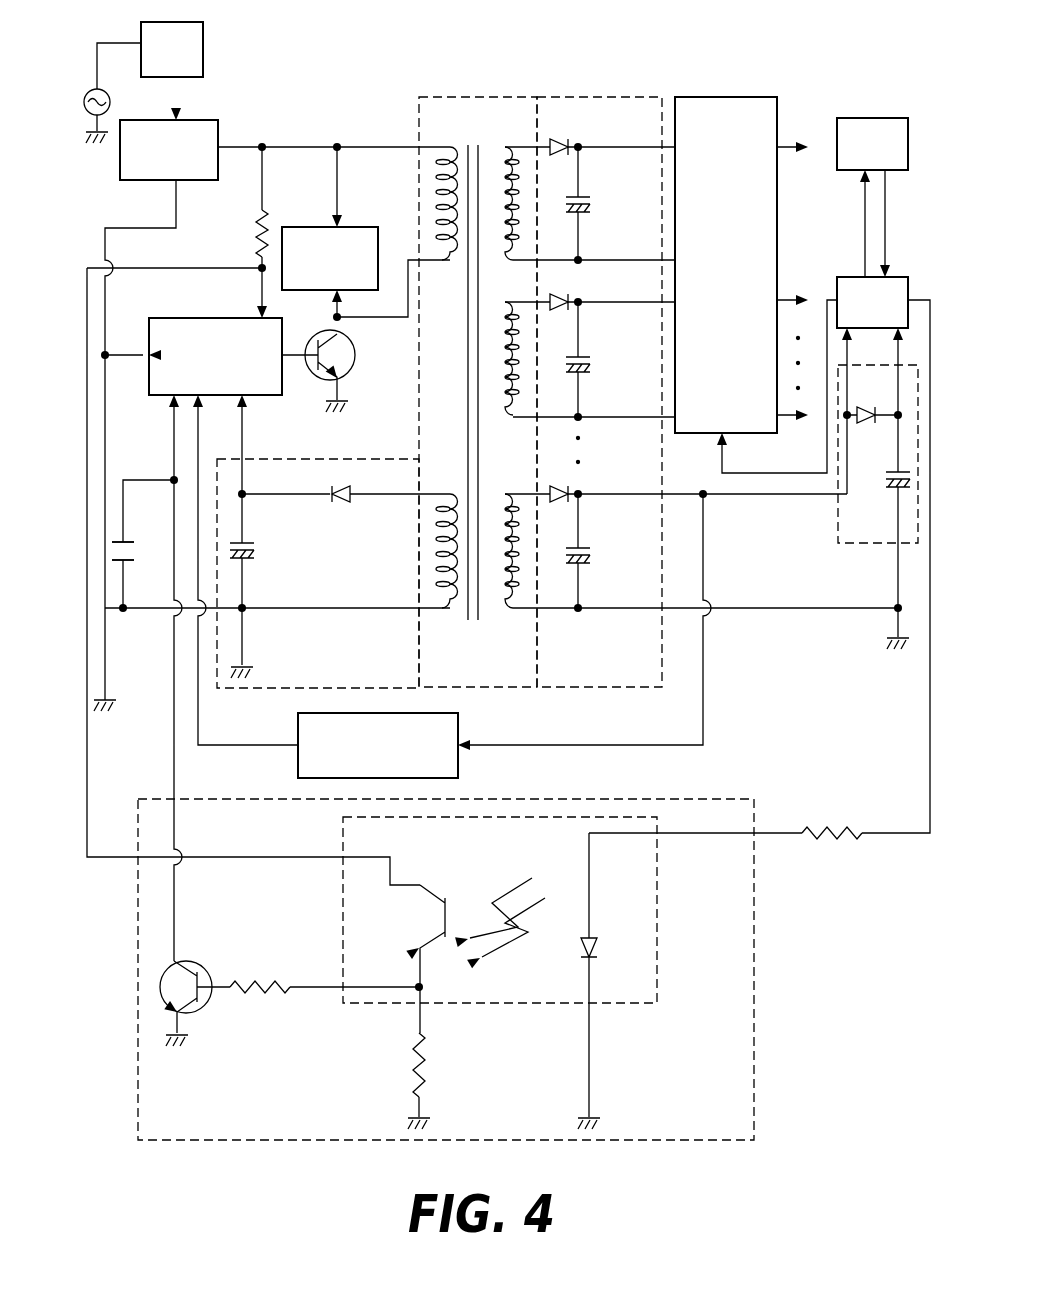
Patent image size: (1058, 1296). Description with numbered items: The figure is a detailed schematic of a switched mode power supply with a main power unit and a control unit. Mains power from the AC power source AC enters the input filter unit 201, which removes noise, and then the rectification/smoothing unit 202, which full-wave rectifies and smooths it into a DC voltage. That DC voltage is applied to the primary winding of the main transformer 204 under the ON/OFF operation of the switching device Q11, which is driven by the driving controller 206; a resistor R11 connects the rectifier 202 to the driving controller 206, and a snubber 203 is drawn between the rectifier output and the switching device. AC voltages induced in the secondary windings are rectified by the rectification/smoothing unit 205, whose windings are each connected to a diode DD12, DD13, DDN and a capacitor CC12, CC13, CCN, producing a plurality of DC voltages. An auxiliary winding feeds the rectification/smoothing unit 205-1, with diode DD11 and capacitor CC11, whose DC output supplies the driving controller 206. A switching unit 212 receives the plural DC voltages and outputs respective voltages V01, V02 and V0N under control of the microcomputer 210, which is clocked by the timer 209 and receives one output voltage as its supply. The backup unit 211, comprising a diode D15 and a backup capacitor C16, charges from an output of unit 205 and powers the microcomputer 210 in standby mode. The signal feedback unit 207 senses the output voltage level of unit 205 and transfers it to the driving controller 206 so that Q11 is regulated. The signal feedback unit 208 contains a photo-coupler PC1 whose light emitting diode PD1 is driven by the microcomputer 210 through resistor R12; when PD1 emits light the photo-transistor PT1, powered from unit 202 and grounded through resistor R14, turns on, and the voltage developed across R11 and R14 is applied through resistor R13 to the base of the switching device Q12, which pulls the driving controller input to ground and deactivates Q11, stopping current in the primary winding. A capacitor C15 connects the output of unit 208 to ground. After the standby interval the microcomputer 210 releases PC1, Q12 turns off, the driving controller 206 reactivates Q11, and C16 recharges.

The input filter unit 201 is at (224, 42).
The rectification/smoothing unit 202 is at (205, 120).
The snubber 203 is at (343, 227).
The main transformer 204 is at (453, 97).
The rectification/smoothing unit 205 is at (701, 369).
The rectification/smoothing unit 205-1 is at (328, 593).
The driving controller 206 is at (165, 318).
The signal feedback unit 207 is at (460, 733).
The signal feedback unit 208 is at (500, 964).
The timer 209 is at (863, 118).
The microcomputer 210 is at (893, 277).
The backup unit 211 is at (843, 464).
The switching unit 212 is at (747, 254).
The AC power source AC is at (110, 98).
The resistor R11 is at (281, 222).
The switching device Q11 is at (355, 355).
The capacitor C15 is at (139, 530).
The diode DD11 is at (346, 509).
The capacitor CC11 is at (272, 540).
The diode DD12 is at (578, 131).
The capacitor CC12 is at (606, 181).
The diode DD13 is at (589, 286).
The capacitor CC13 is at (608, 353).
The diode DDN is at (591, 477).
The capacitor CCN is at (607, 544).
The output voltage V01 is at (799, 123).
The output voltage V02 is at (801, 278).
The output voltage V0N is at (786, 451).
The diode D15 is at (872, 398).
The backup capacitor C16 is at (880, 490).
The resistor R12 is at (725, 814).
The resistor R13 is at (323, 968).
The resistor R14 is at (446, 1081).
The switching device Q12 is at (212, 1000).
The photo-transistor PT1 is at (475, 934).
The light emitting diode PD1 is at (609, 981).
The photo-coupler PC1 is at (534, 973).